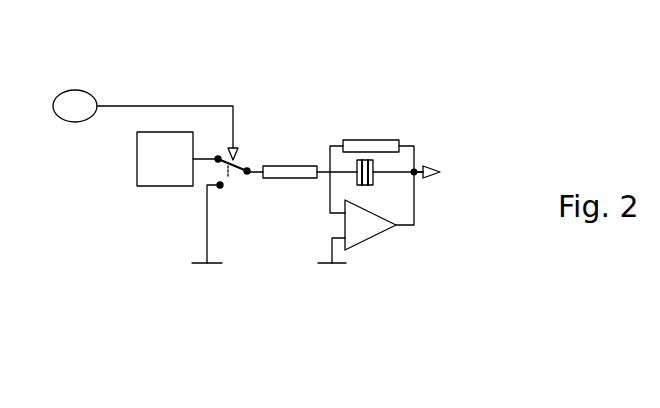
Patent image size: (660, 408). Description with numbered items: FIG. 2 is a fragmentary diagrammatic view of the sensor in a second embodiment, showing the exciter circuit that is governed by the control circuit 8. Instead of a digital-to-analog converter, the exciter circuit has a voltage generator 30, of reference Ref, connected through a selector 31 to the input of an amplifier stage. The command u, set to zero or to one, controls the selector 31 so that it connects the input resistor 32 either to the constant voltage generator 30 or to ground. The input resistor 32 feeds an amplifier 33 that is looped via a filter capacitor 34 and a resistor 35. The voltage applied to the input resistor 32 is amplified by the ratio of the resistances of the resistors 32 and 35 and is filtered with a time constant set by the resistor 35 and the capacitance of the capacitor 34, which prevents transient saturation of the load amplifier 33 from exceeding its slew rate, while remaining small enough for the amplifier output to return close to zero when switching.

The control circuit 8 is at (275, 98).
The voltage generator 30 is at (158, 177).
The selector 31 is at (240, 173).
The input resistor 32 is at (310, 178).
The amplifier 33 is at (372, 229).
The filter capacitor 34 is at (372, 180).
The resistor 35 is at (415, 173).